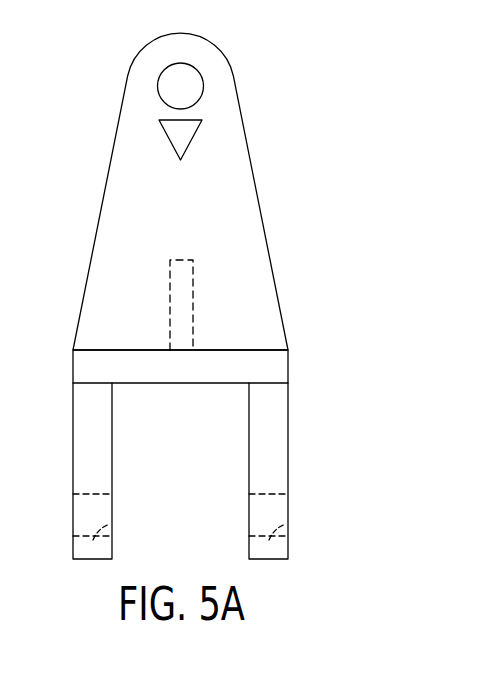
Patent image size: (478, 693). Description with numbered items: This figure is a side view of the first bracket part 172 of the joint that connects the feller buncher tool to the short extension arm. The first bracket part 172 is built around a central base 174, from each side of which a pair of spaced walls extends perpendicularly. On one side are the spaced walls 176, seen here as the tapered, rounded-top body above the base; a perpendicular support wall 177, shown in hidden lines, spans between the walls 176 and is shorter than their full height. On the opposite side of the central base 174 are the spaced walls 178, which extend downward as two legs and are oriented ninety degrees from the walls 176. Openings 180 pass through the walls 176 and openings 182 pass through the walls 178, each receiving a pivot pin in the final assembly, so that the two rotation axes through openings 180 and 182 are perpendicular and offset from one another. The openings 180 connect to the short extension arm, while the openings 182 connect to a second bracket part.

The first bracket part 172 is at (221, 296).
The central base 174 is at (179, 383).
The spaced walls 176 is at (227, 105).
The perpendicular support wall 177 is at (192, 303).
The spaced walls 178 is at (100, 470).
The openings 180 is at (178, 64).
The openings 182 is at (112, 523).